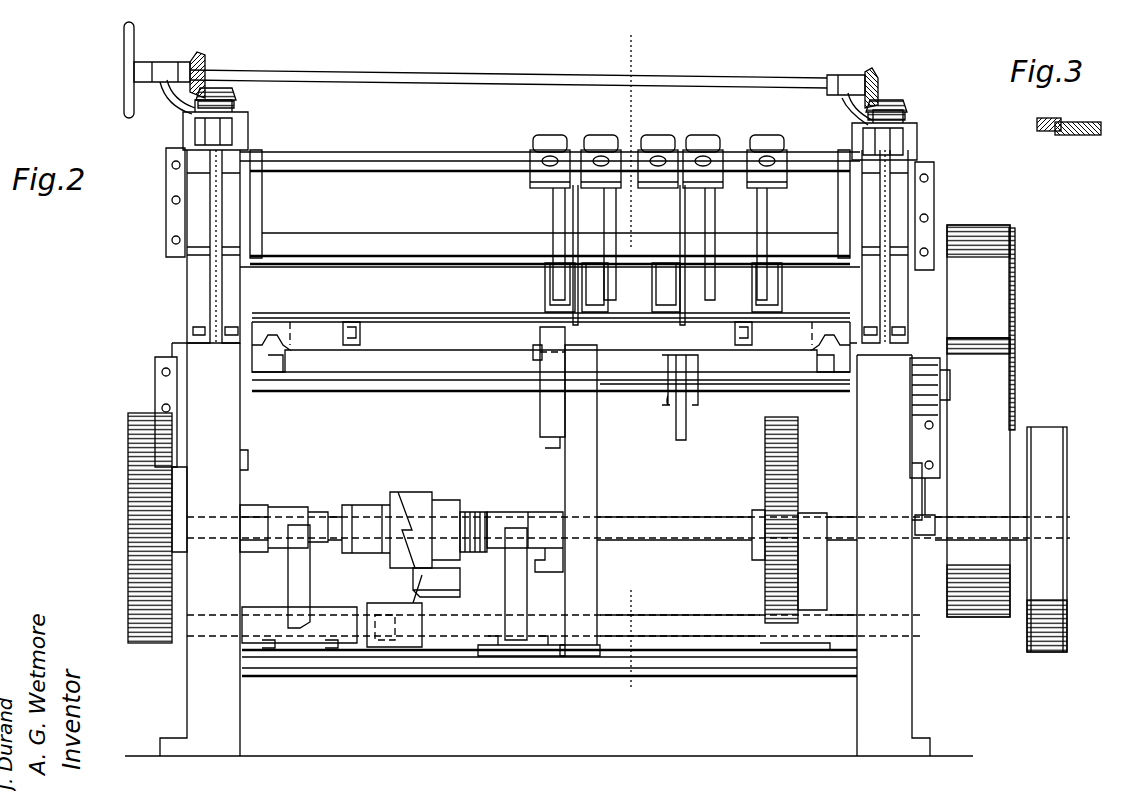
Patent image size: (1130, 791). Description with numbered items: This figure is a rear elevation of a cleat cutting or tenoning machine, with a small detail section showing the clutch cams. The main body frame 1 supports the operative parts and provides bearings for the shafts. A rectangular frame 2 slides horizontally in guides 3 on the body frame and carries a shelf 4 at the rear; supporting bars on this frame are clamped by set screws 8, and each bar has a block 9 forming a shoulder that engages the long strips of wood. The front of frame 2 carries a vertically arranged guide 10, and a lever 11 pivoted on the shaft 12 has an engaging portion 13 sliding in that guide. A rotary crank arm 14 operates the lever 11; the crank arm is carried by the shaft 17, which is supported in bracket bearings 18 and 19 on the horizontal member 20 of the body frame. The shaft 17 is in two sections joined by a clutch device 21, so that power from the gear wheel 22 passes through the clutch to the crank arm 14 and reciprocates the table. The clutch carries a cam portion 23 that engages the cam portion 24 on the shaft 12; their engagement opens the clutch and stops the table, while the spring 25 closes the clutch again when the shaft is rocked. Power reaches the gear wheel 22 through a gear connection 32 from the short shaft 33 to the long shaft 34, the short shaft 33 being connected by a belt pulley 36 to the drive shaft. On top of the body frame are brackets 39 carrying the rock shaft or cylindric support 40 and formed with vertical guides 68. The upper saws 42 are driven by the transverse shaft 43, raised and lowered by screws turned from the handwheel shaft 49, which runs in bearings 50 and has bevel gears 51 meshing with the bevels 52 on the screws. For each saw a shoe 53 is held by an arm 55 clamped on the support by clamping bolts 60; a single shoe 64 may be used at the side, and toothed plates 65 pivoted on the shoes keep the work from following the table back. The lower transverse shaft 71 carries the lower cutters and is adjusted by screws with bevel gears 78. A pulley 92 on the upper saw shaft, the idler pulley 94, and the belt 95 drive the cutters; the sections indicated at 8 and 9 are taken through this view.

In FIG. 2, the main body frame 1 is at (232, 420).
In FIG. 2, the rectangular frame 2 is at (408, 352).
In FIG. 2, the guides 3 is at (270, 338).
In FIG. 2, the shelf 4 is at (405, 318).
In FIG. 2, the set screws 8 is at (642, 52).
In FIG. 2, the block 9 is at (648, 379).
In FIG. 2, the vertically arranged guide 10 is at (545, 413).
In FIG. 2, the lever 11 is at (590, 450).
In FIG. 2, the shaft 12 is at (712, 625).
In FIG. 2, the engaging portion 13 is at (534, 352).
In FIG. 2, the rotary crank arm 14 is at (565, 525).
In FIG. 2, the shaft 17 is at (258, 525).
In FIG. 2, the bracket bearing 18 is at (288, 580).
In FIG. 2, the bracket bearing 19 is at (516, 590).
In FIG. 2, the horizontal member 20 is at (415, 625).
In FIG. 2, the clutch device 21 is at (420, 495).
In FIG. 2, the gear wheel 22 is at (135, 485).
In FIG. 2, the cam portion 23 is at (435, 585).
In FIG. 3, the cam portion 23 is at (1075, 135).
In FIG. 2, the cam portion 24 is at (405, 605).
In FIG. 3, the cam portion 24 is at (1037, 128).
In FIG. 2, the spring 25 is at (478, 510).
In FIG. 2, the gear connection 32 is at (780, 515).
In FIG. 2, the short shaft 33 is at (840, 530).
In FIG. 2, the long shaft 34 is at (695, 522).
In FIG. 2, the belt pulley 36 is at (1050, 435).
In FIG. 2, the brackets 39 is at (218, 205).
In FIG. 2, the rock shaft or cylindric support 40 is at (427, 160).
In FIG. 2, the upper saws 42 is at (556, 212).
In FIG. 2, the transverse shaft 43 is at (381, 236).
In FIG. 2, the handwheel shaft 49 is at (415, 78).
In FIG. 2, the bearings 50 is at (165, 72).
In FIG. 2, the bevel gears 51 is at (205, 62).
In FIG. 2, the bevel gears 52 is at (235, 97).
In FIG. 2, the shoe 53 is at (595, 290).
In FIG. 2, the arm 55 is at (610, 218).
In FIG. 2, the clamping bolts or screws 60 is at (660, 152).
In FIG. 2, the single shoe 64 is at (782, 303).
In FIG. 2, the pivoted swinging plates 65 is at (624, 305).
In FIG. 2, the vertical guides 68 is at (243, 130).
In FIG. 2, the transverse shaft 71 is at (750, 392).
In FIG. 2, the bevel gears 78 is at (688, 420).
In FIG. 2, the pulley 92 is at (1010, 250).
In FIG. 2, the idler pulley 94 is at (1012, 385).
In FIG. 2, the belt 95 is at (1000, 318).